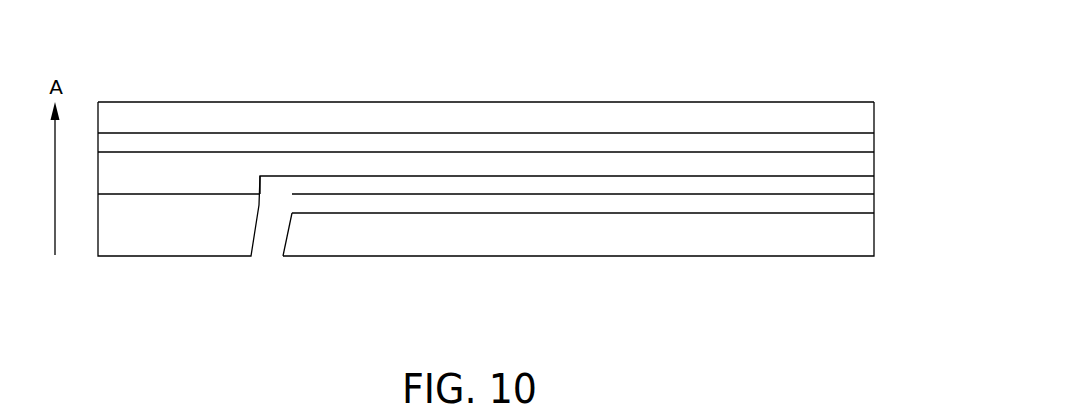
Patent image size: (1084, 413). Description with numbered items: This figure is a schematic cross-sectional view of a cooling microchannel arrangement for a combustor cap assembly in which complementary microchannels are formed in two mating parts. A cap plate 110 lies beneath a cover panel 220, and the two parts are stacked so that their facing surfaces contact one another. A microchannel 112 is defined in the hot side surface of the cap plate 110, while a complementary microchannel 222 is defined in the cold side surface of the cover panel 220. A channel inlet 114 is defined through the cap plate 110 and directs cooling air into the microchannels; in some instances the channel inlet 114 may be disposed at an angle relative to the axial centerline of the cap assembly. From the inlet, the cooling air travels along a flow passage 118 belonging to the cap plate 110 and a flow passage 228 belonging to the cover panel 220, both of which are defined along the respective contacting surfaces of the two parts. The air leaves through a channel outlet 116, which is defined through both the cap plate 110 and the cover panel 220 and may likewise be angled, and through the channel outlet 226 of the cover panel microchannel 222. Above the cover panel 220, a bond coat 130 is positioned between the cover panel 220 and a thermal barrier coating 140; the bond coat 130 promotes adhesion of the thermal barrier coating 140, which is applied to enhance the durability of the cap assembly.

The cap plate 110 is at (93, 226).
The microchannel 112 is at (489, 216).
The channel inlet 114 is at (267, 233).
The channel outlet 116 is at (865, 210).
The flow passage 118 is at (555, 205).
The bond coat 130 is at (866, 142).
The thermal barrier coating 140 is at (645, 122).
The cover panel 220 is at (866, 165).
The microchannel 222 is at (409, 181).
The channel outlet 226 is at (865, 187).
The flow passage 228 is at (528, 188).